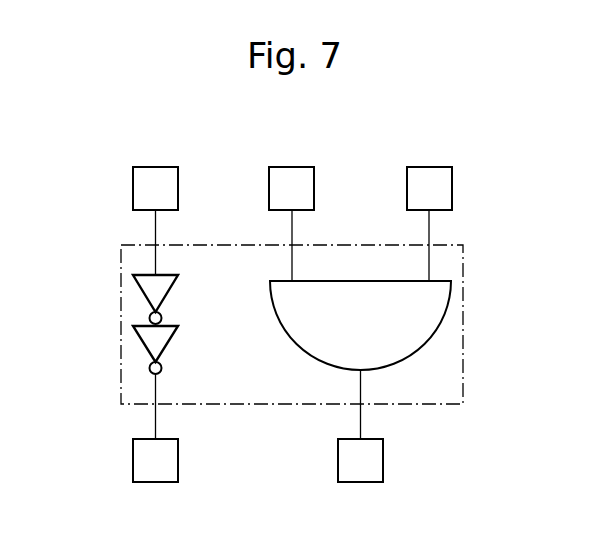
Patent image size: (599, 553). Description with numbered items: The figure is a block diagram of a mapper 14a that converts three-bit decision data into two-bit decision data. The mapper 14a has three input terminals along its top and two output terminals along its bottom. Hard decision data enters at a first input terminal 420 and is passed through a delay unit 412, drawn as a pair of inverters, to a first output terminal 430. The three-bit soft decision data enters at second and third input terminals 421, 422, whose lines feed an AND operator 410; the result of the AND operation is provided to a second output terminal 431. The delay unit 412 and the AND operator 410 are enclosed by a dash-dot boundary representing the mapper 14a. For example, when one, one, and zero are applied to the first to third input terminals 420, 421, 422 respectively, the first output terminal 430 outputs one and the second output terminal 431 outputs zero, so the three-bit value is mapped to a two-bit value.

The mapper 14a is at (463, 245).
The AND operator 410 is at (447, 315).
The delay unit 412 is at (142, 340).
The first input terminal 420 is at (154, 167).
The second input terminal 421 is at (291, 167).
The third input terminal 422 is at (428, 167).
The first output terminal 430 is at (155, 482).
The second output terminal 431 is at (360, 482).